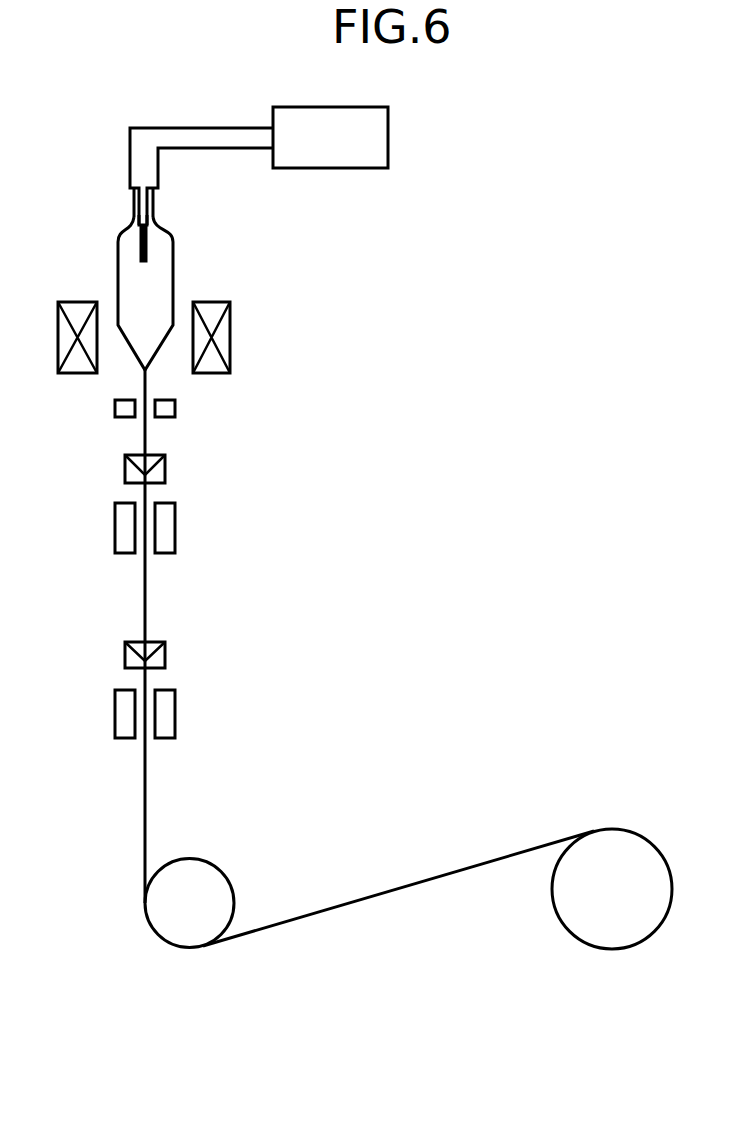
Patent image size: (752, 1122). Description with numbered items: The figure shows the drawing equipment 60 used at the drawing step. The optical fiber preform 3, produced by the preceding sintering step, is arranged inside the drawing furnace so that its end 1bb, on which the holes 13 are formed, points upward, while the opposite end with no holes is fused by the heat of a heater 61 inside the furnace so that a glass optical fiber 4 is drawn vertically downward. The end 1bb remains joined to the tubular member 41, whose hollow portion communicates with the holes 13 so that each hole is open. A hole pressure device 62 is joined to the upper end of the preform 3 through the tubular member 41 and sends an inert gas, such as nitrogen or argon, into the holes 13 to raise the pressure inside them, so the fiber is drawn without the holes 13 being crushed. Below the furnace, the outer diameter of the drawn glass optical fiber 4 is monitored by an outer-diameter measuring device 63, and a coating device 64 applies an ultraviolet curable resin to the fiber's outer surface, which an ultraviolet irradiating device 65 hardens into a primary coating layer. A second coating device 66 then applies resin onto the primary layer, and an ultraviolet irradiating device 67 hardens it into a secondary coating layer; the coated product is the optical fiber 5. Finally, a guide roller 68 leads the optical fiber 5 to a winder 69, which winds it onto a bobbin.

The drawing equipment 60 is at (678, 221).
The hole pressure device 62 is at (388, 135).
The tubular member 41 is at (155, 202).
The end 1bb is at (135, 216).
The holes 13 is at (148, 240).
The optical fiber preform 3 is at (173, 280).
The heater 61 is at (230, 338).
The glass optical fiber 4 is at (145, 435).
The outer-diameter measuring device 63 is at (175, 407).
The coating device 64 is at (165, 468).
The ultraviolet irradiating device 65 is at (175, 527).
The coating device 66 is at (165, 653).
The ultraviolet irradiating device 67 is at (175, 712).
The optical fiber 5 is at (145, 797).
The guide roller 68 is at (190, 868).
The winder 69 is at (612, 838).